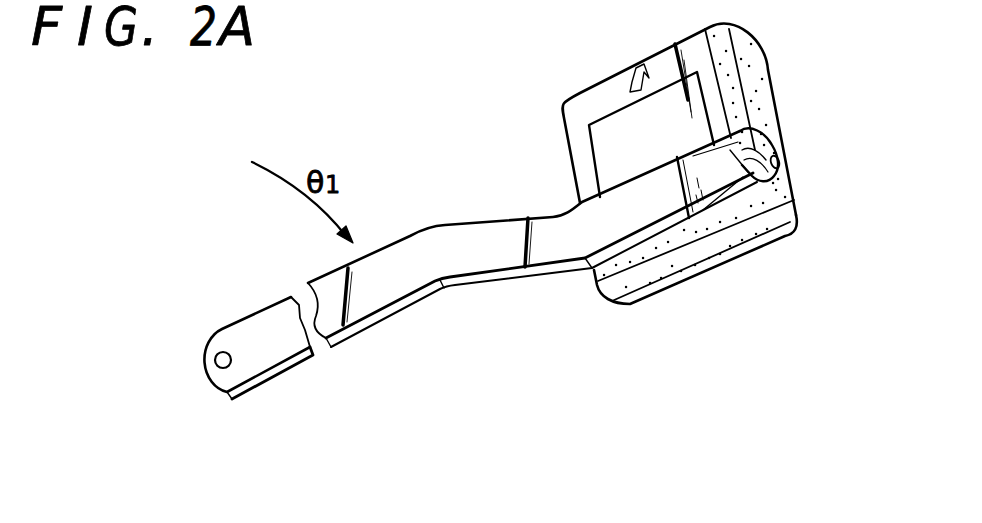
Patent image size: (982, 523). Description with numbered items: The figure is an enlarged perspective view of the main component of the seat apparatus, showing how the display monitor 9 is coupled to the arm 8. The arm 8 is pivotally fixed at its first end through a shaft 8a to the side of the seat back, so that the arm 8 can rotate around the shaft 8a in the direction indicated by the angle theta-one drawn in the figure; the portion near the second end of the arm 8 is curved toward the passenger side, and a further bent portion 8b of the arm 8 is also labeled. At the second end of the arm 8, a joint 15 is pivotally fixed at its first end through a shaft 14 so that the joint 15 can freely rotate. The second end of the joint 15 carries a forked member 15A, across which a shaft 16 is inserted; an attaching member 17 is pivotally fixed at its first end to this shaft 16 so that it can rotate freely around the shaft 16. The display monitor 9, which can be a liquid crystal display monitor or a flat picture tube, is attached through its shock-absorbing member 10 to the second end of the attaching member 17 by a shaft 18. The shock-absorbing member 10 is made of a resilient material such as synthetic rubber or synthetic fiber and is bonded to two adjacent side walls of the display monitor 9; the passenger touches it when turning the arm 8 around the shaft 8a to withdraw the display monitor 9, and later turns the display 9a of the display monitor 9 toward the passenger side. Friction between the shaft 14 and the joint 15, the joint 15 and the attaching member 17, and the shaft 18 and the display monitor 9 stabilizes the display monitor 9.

The arm 8 is at (388, 297).
The shaft 8a is at (231, 370).
The bent portion of arm 8b is at (502, 253).
The display monitor 9 is at (582, 100).
The display 9a is at (592, 144).
The shock-absorbing member 10 is at (765, 80).
The shaft 14 is at (665, 198).
The joint 15 is at (733, 190).
The forked member 15A is at (757, 187).
The shaft 16 is at (790, 217).
The attaching member 17 is at (757, 155).
The shaft 18 is at (780, 163).